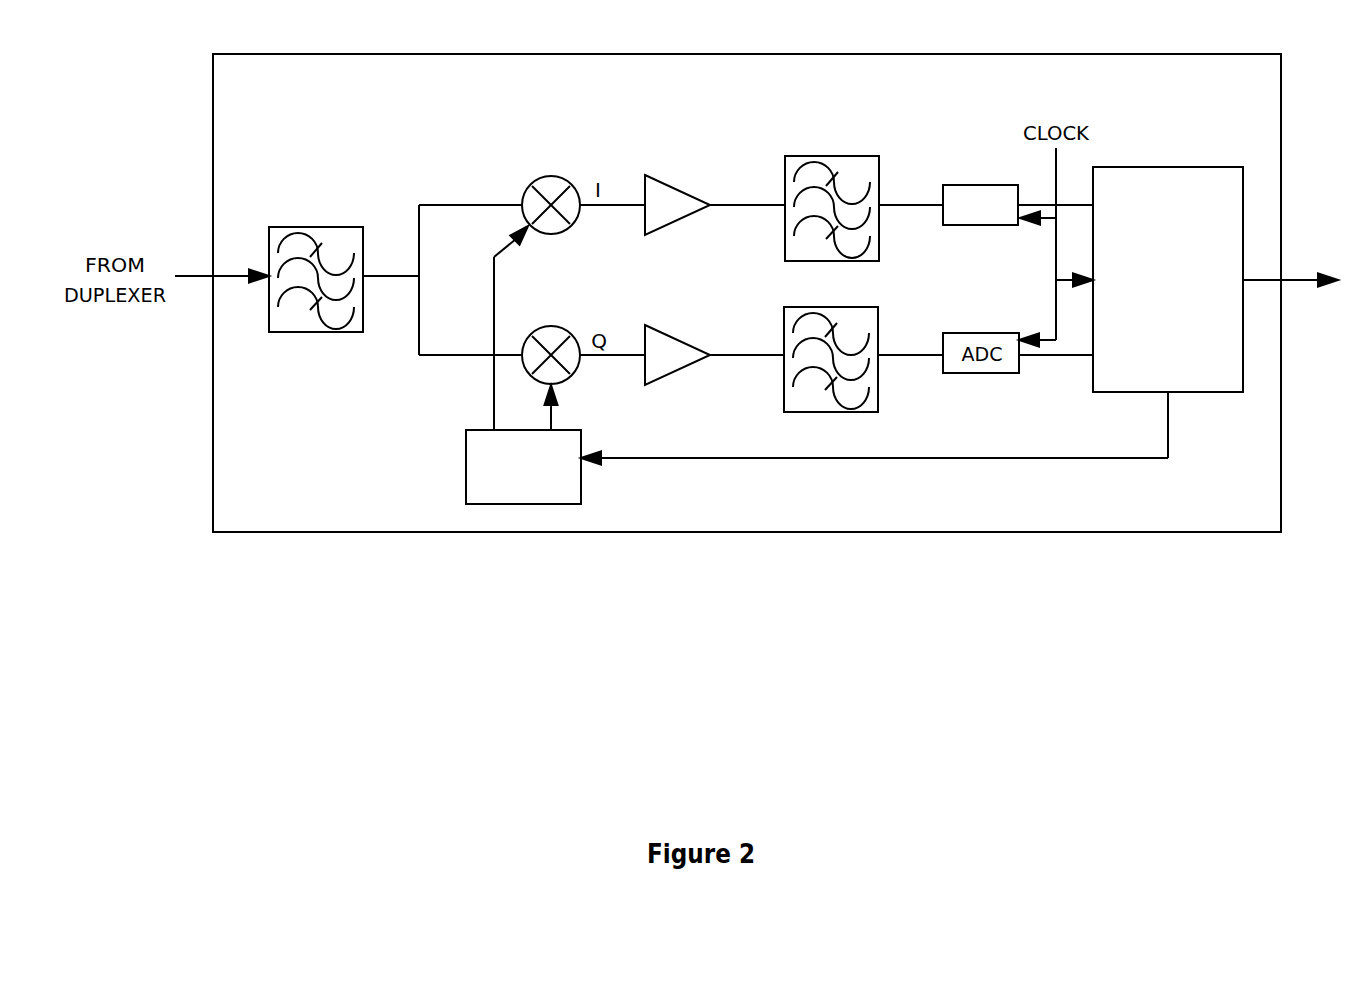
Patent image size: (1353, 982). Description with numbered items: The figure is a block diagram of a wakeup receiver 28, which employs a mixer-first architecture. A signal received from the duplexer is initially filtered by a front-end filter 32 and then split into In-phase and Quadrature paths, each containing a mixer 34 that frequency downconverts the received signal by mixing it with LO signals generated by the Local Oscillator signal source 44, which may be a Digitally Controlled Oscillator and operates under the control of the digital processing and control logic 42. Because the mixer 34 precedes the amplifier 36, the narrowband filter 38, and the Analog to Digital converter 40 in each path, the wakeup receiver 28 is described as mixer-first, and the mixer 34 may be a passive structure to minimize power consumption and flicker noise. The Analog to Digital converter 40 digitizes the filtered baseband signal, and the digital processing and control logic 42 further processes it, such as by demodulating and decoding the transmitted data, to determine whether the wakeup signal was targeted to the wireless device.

The wakeup receiver 28 is at (370, 147).
The front-end filter 32 is at (316, 227).
The mixer 34 is at (551, 176).
The amplifier 36 is at (666, 182).
The narrowband filter 38 is at (823, 155).
The Analog to Digital converter 40 is at (990, 185).
The digital processing and control logic 42 is at (1180, 336).
The Local Oscillator signal source 44 is at (466, 462).